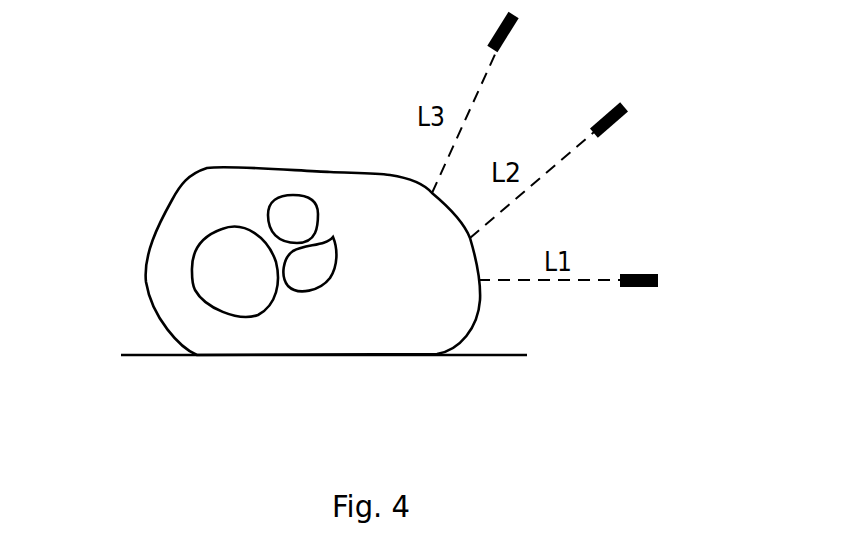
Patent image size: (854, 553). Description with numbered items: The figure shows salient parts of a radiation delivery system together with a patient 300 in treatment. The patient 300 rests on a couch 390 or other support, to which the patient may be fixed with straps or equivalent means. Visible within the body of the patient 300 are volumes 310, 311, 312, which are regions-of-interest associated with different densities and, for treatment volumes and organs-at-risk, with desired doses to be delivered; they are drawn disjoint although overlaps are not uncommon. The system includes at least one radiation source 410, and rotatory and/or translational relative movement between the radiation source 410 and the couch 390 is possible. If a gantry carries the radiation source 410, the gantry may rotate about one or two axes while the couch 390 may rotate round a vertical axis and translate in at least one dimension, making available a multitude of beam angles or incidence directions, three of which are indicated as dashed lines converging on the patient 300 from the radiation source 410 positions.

The patient 300 is at (173, 201).
The volume 310 is at (192, 271).
The volume 311 is at (293, 195).
The volume 312 is at (333, 237).
The couch 390 is at (144, 343).
The radiation source 410 is at (514, 30).